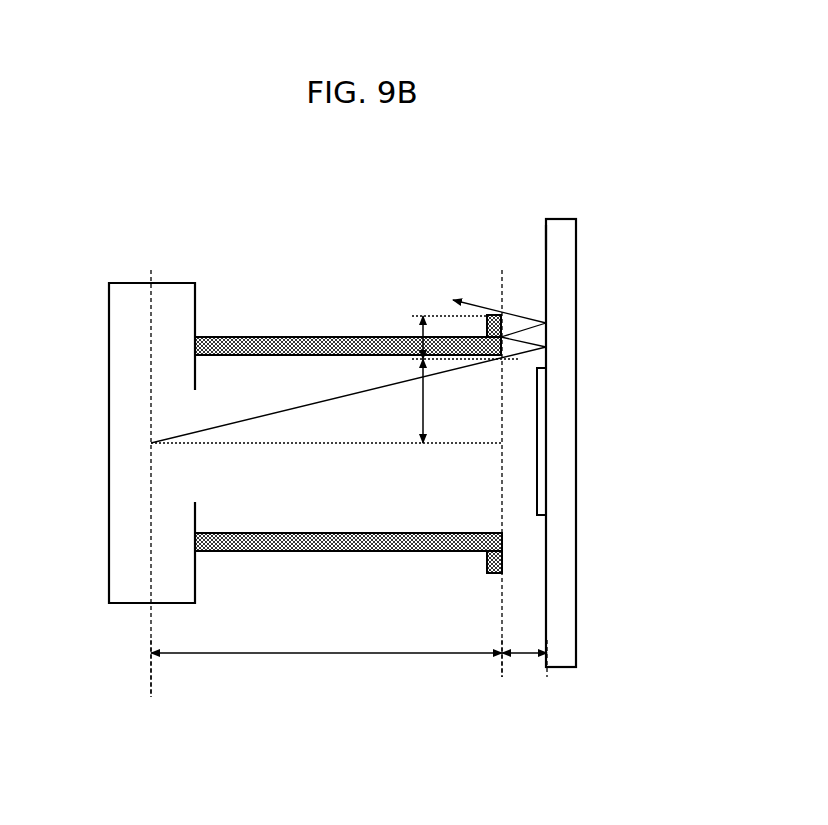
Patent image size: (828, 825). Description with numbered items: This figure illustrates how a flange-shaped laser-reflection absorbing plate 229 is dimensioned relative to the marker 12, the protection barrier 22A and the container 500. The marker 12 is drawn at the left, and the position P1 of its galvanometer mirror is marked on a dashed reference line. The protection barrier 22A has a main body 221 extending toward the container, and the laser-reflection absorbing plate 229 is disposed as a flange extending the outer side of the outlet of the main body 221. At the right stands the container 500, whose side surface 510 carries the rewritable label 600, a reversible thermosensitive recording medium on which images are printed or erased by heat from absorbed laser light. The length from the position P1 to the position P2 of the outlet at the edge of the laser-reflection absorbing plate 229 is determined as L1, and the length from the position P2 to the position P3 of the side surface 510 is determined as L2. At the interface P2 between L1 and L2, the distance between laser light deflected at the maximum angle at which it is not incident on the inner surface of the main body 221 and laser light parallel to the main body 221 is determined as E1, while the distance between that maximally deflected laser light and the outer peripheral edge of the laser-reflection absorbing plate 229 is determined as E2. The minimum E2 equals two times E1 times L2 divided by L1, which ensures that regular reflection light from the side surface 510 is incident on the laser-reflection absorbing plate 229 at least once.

The marker 12 is at (124, 283).
The protection barrier 22A is at (262, 335).
The main body 221 is at (264, 552).
The laser-reflection absorbing plate 229 is at (487, 560).
The container 500 is at (565, 261).
The side surface 510 is at (546, 235).
The rewritable label 600 is at (550, 387).
The distance E1 is at (418, 400).
The distance E2 is at (418, 333).
The length L1 is at (325, 656).
The length L2 is at (525, 656).
The position P1 is at (149, 668).
The position P2 is at (499, 670).
The position P3 is at (548, 672).